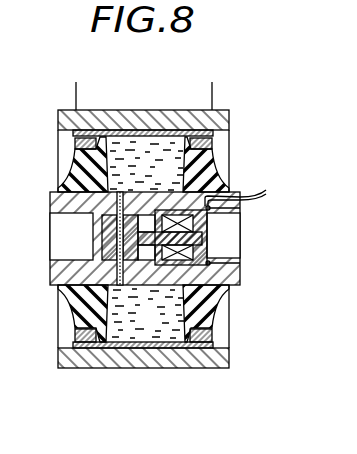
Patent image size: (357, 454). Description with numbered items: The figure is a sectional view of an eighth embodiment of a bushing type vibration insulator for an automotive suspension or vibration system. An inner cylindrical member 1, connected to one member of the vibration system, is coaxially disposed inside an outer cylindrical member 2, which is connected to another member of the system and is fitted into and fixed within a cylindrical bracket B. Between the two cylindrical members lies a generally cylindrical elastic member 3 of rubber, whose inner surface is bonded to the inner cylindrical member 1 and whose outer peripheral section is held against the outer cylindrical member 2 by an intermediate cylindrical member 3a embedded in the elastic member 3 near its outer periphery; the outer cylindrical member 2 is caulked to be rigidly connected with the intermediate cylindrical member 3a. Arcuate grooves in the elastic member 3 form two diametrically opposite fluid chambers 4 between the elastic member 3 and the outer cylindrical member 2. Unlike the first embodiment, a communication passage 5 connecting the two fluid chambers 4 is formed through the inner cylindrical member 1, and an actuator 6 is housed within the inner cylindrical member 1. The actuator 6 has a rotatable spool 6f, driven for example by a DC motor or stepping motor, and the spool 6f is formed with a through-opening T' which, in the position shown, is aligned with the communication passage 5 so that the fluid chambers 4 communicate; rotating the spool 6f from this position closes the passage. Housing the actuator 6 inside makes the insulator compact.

The cylindrical bracket B is at (230, 118).
The inner cylindrical member 1 is at (56, 275).
The outer cylindrical member 2 is at (125, 346).
The elastic member 3 is at (72, 310).
The intermediate cylindrical member 3a is at (75, 147).
The fluid chamber 4 is at (147, 240).
The communication passage 5 is at (117, 203).
The actuator 6 is at (212, 238).
The spool 6f is at (108, 232).
The through-opening T' is at (72, 243).